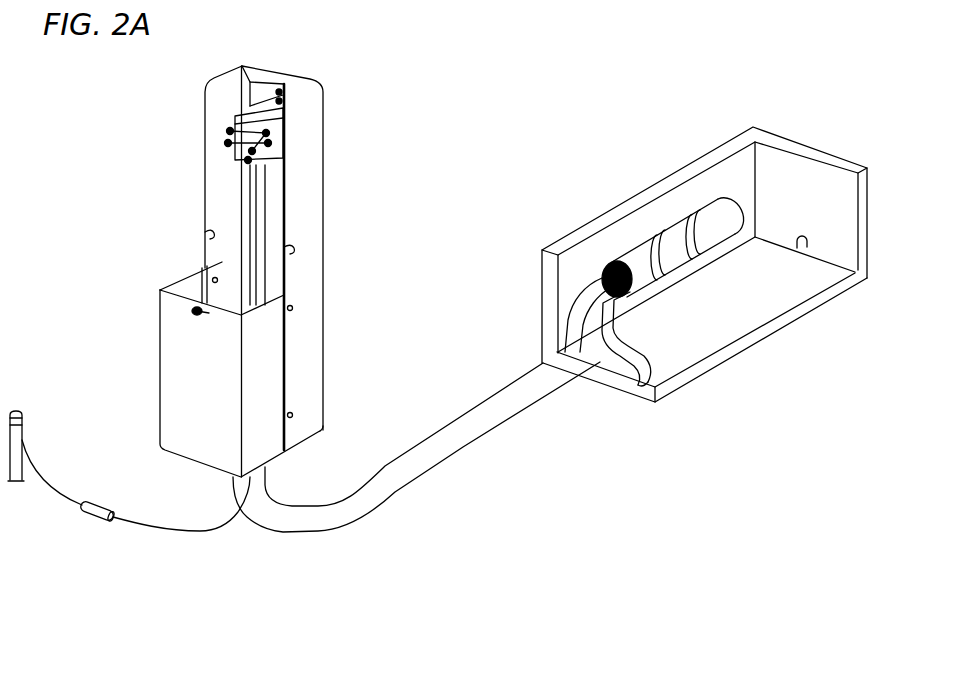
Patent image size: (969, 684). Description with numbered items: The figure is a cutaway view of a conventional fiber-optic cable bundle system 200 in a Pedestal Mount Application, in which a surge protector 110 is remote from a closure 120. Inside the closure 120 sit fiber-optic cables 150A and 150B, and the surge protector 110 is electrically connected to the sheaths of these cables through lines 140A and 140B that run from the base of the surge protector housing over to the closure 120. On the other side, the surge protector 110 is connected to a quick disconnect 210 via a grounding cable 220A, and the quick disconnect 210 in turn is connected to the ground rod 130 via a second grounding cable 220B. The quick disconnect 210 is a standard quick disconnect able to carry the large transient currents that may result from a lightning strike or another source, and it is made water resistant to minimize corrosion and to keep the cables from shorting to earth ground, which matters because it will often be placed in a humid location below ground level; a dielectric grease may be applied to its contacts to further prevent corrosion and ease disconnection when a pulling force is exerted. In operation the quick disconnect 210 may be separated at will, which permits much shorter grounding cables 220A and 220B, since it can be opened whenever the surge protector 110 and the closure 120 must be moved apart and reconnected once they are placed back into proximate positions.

The fiber-optic cable bundle system 200 is at (352, 143).
The surge protector 110 is at (243, 108).
The closure 120 is at (635, 252).
The ground rod 130 is at (13, 407).
The line 140A is at (497, 393).
The line 140B is at (462, 447).
The fiber-optic cable 150A is at (768, 267).
The fiber-optic cable 150B is at (663, 370).
The quick disconnect 210 is at (108, 502).
The grounding cable 220A is at (152, 527).
The grounding cable 220B is at (47, 487).